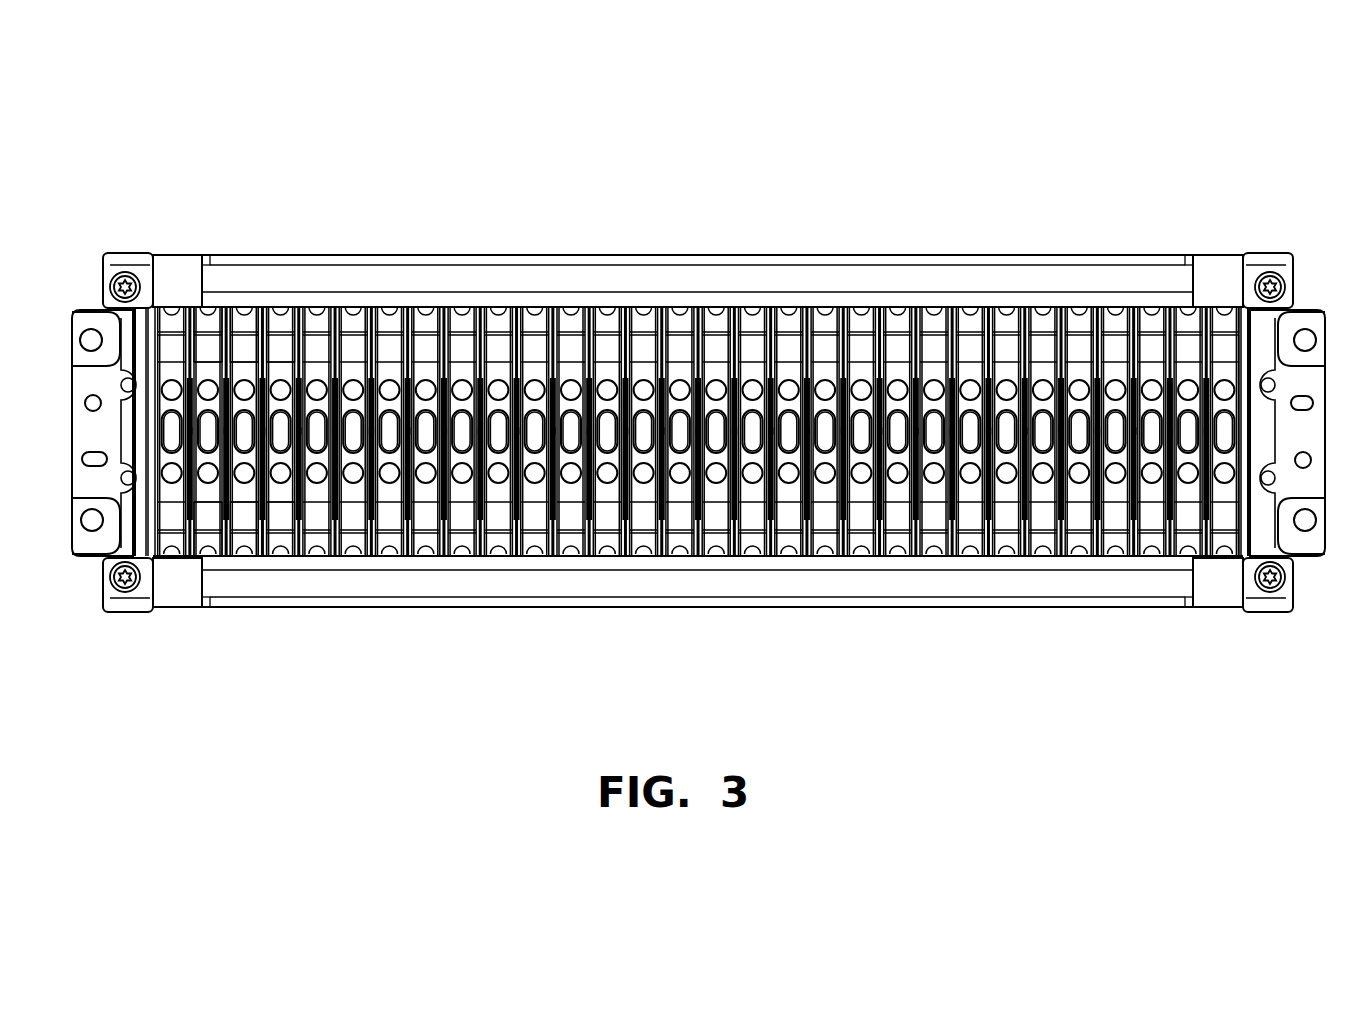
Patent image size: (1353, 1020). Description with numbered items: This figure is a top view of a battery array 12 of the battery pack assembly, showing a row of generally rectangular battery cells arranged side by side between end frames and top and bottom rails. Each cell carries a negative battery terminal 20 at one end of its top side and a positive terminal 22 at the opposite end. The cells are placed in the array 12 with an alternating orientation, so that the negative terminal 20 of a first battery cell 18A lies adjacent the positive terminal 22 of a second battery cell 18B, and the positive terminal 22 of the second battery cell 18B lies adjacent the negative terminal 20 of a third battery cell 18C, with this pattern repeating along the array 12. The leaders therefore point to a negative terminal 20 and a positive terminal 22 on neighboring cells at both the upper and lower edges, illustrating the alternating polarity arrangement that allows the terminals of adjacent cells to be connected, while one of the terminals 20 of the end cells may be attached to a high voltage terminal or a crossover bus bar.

The battery array 12 is at (820, 215).
The first battery cell 18A is at (212, 320).
The second battery cell 18B is at (248, 320).
The third battery cell 18C is at (293, 323).
The negative battery terminal 20 is at (240, 343).
The positive terminal 22 is at (202, 343).